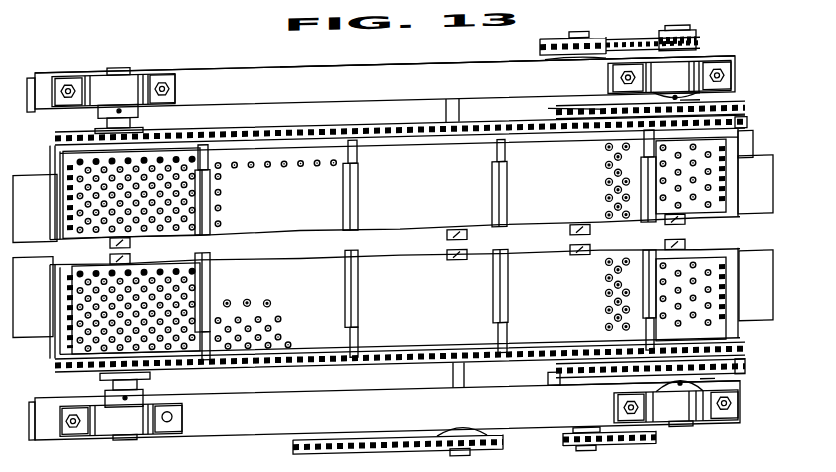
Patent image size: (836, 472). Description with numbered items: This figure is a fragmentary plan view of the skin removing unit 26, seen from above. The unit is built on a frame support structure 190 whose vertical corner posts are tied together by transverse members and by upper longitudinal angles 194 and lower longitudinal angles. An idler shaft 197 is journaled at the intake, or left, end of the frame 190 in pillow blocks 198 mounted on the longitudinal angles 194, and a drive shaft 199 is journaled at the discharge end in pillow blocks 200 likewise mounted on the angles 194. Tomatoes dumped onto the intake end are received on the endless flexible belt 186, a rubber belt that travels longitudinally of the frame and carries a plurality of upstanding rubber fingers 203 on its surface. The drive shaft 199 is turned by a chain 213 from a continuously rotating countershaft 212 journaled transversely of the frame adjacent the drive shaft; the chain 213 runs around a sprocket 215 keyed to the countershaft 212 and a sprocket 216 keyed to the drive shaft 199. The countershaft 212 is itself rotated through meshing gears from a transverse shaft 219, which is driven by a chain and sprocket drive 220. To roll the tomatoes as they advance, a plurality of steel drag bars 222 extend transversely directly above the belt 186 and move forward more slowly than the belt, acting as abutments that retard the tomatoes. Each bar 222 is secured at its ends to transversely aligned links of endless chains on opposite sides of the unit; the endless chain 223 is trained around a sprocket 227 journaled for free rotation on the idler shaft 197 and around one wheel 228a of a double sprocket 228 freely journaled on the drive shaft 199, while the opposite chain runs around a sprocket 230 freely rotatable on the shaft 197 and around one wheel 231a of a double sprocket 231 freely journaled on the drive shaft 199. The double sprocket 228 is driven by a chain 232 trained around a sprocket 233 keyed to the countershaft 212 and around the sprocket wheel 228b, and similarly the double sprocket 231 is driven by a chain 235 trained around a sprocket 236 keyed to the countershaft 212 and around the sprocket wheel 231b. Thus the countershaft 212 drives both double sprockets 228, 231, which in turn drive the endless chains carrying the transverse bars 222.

The skin removing unit 26 is at (268, 66).
The endless flexible belt 186 is at (440, 209).
The frame support structure 190 is at (336, 76).
The upper longitudinal angles 194 is at (381, 84).
The idler shaft 197 is at (113, 64).
The pillow blocks 198 is at (128, 76).
The drive shaft 199 is at (687, 36).
The pillow blocks 200 is at (688, 82).
The rubber fingers 203 is at (229, 299).
The countershaft 212 is at (583, 27).
The chain 213 is at (615, 47).
The sprocket 215 is at (545, 68).
The sprocket 216 is at (688, 45).
The transverse shaft 219 is at (458, 454).
The chain and sprocket drive 220 is at (390, 451).
The drag bars 222 is at (335, 256).
The endless chain 223 is at (410, 368).
The sprocket 227 is at (137, 376).
The double sprocket 228 is at (668, 394).
The sprocket wheel 228a is at (743, 363).
The sprocket wheel 228b is at (713, 389).
The sprocket 230 is at (140, 124).
The double sprocket 231 is at (690, 110).
The sprocket wheel 231a is at (700, 113).
The sprocket wheel 231b is at (745, 139).
The chain 232 is at (548, 384).
The sprocket 233 is at (560, 397).
The chain 235 is at (598, 116).
The sprocket 236 is at (548, 115).